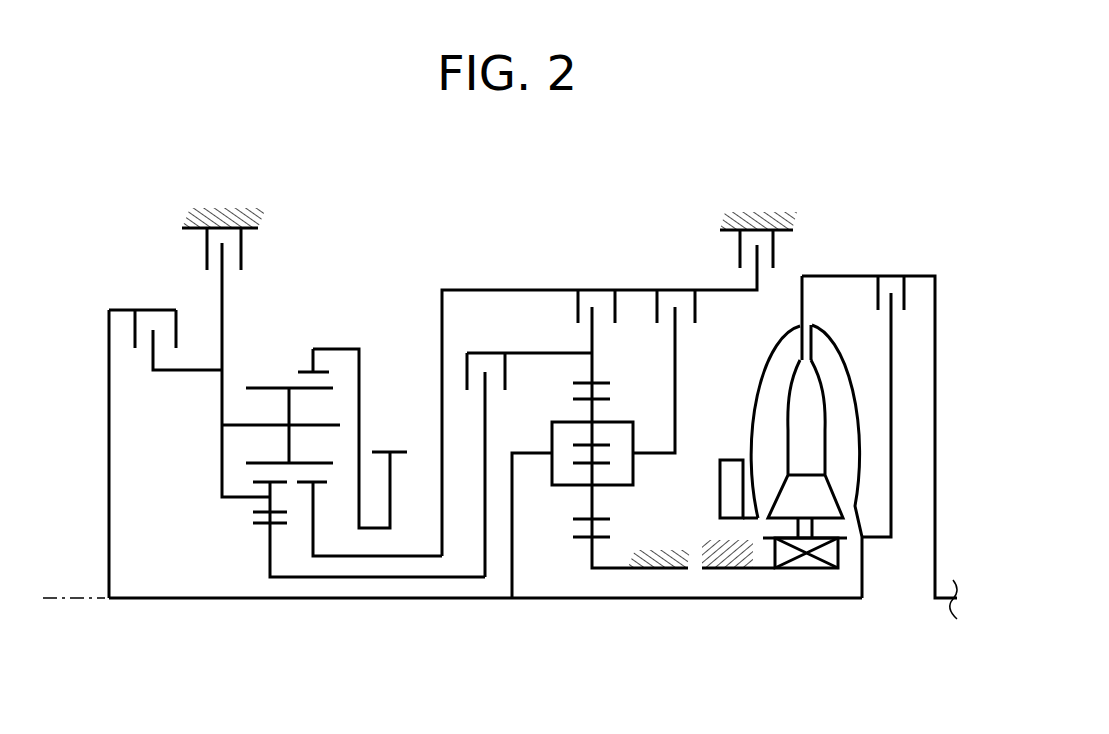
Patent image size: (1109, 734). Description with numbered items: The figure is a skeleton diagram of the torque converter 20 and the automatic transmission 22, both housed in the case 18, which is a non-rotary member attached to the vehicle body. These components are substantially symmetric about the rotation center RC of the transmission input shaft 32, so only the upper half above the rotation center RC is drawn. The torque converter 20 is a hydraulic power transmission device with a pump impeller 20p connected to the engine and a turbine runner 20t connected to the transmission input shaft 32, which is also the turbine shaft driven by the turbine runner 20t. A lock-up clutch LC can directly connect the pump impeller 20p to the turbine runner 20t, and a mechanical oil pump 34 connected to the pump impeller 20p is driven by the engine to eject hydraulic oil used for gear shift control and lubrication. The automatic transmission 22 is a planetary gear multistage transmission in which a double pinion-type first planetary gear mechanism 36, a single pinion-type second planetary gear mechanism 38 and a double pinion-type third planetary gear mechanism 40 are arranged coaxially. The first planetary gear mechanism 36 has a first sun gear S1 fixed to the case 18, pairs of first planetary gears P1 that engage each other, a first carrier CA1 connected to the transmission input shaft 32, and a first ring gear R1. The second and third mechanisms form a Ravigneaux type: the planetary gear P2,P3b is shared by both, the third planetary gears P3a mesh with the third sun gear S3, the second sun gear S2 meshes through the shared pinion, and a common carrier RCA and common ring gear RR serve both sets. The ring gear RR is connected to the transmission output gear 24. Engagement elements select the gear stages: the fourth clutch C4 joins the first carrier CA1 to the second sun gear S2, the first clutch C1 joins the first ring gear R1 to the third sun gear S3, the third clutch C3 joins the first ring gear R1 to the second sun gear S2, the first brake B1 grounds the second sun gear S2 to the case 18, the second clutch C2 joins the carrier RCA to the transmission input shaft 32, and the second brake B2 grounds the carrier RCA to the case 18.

The automatic transmission 22 is at (194, 181).
The case 18 is at (228, 216).
The transmission output gear 24 is at (394, 450).
The torque converter 20 is at (794, 450).
The pump impeller 20p is at (772, 440).
The turbine runner 20t is at (842, 414).
The mechanical oil pump 34 is at (726, 487).
The transmission input shaft 32 is at (683, 600).
The first planetary gear mechanism 36 is at (595, 615).
The second planetary gear mechanism 38 is at (315, 615).
The third planetary gear mechanism 40 is at (265, 615).
The rotation center RC is at (62, 600).
The first brake B1 is at (776, 249).
The second brake B2 is at (238, 249).
The first clutch C1 is at (529, 359).
The second clutch C2 is at (165, 441).
The third clutch C3 is at (595, 294).
The fourth clutch C4 is at (664, 359).
The lock-up clutch LC is at (865, 291).
The ring gear RR is at (304, 372).
The carrier RCA is at (222, 446).
The second planetary gear and third planetary gear P2,P3b is at (267, 388).
The third planetary gear P3a is at (262, 480).
The second sun gear S2 is at (318, 482).
The third sun gear S3 is at (253, 516).
The first carrier CA1 is at (535, 453).
The first ring gear R1 is at (600, 382).
The first planetary gears P1 is at (620, 422).
The first sun gear S1 is at (583, 527).